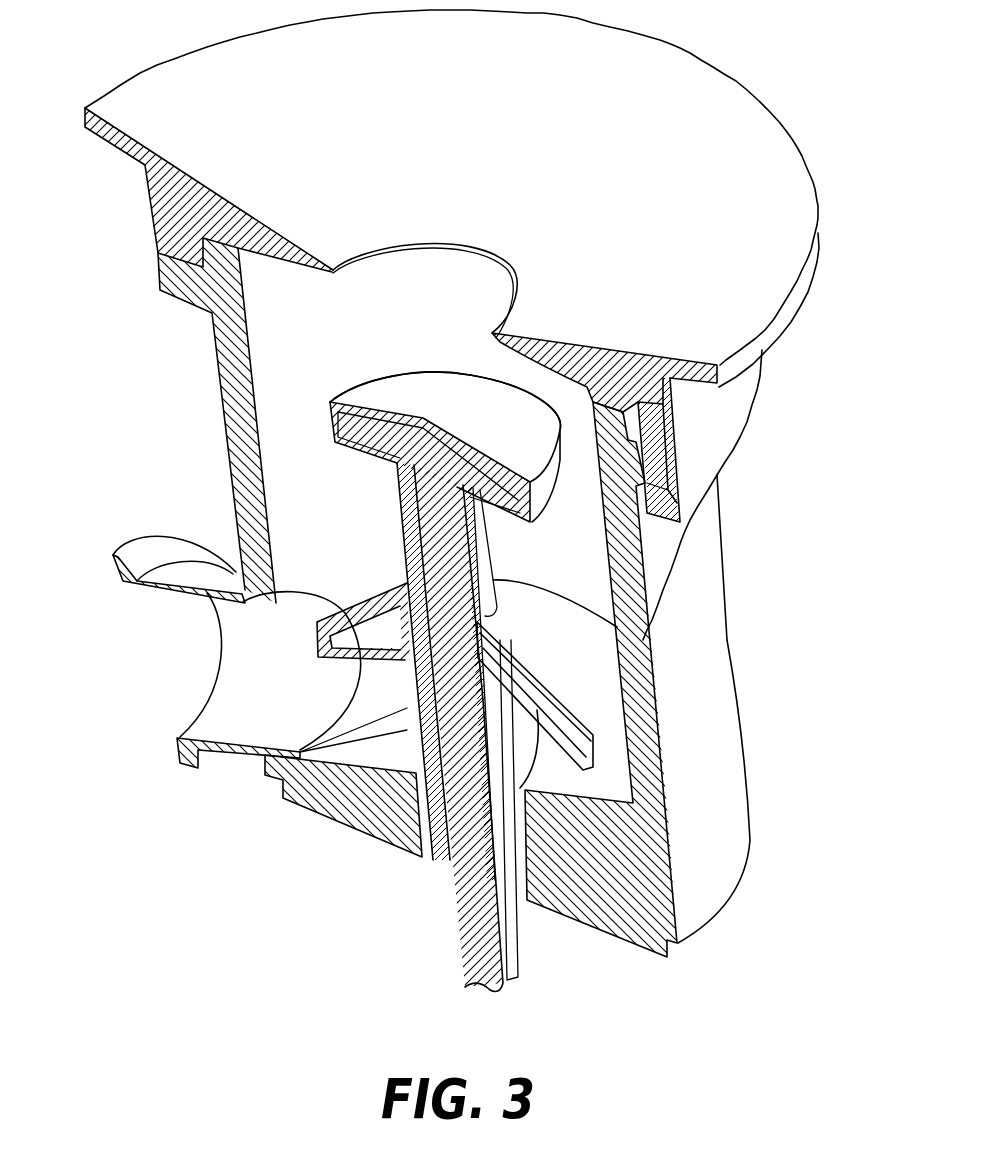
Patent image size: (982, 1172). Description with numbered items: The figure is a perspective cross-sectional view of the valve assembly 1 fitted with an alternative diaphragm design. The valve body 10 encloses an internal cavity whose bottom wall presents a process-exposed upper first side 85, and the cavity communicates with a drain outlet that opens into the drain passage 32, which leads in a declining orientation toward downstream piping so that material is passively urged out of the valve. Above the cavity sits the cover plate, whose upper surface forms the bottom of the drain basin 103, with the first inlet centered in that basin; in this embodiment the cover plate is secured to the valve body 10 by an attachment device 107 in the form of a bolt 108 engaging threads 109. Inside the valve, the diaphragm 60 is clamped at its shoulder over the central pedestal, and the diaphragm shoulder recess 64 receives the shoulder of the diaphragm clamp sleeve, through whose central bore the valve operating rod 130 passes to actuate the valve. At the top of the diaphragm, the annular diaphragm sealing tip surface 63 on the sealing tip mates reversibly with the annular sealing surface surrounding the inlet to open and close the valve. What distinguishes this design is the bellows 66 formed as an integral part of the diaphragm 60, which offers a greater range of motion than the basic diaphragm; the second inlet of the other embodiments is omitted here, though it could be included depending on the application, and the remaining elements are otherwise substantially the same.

The valve assembly 1 is at (146, 428).
The valve body 10 is at (647, 765).
The drain passage 32 is at (284, 703).
The diaphragm 60 is at (408, 532).
The annular diaphragm sealing tip surface 63 is at (390, 392).
The diaphragm shoulder recess 64 is at (473, 397).
The bellows 66 is at (587, 710).
The upper first side 85 is at (613, 802).
The drain basin 103 is at (643, 243).
The attachment device 107 is at (740, 481).
The bolt 108 is at (677, 520).
The threads 109 is at (675, 430).
The valve operating rod 130 is at (462, 925).